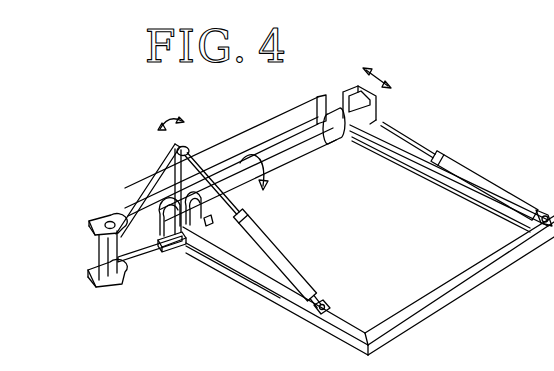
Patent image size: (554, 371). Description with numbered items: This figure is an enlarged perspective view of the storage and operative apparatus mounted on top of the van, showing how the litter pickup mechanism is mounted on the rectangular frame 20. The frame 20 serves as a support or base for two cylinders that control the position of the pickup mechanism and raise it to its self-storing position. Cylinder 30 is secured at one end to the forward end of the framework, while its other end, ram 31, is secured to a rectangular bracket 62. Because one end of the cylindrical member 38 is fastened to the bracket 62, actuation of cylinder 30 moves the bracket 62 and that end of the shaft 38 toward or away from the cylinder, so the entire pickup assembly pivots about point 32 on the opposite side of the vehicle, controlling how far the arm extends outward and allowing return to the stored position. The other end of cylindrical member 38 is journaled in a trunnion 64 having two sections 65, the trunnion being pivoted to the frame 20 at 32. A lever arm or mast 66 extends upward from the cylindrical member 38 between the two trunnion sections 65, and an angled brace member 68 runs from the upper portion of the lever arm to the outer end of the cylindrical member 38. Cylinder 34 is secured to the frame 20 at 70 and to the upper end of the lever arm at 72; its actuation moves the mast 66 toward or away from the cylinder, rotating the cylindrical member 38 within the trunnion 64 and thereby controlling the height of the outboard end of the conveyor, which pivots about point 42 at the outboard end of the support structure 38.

The rectangular frame 20 is at (473, 290).
The cylinder 30 is at (488, 188).
The ram 31 is at (407, 143).
The pivot point 32 is at (189, 253).
The cylinder 34 is at (285, 260).
The cylindrical member 38 is at (308, 148).
The pivot point 42 is at (107, 259).
The rectangular bracket 62 is at (353, 87).
The trunnion 64 is at (176, 256).
The trunnion sections 65 is at (168, 247).
The lever arm or mast 66 is at (189, 155).
The angled brace member 68 is at (146, 191).
The cylinder mounting point 70 is at (329, 305).
The lever arm connection point 72 is at (186, 147).